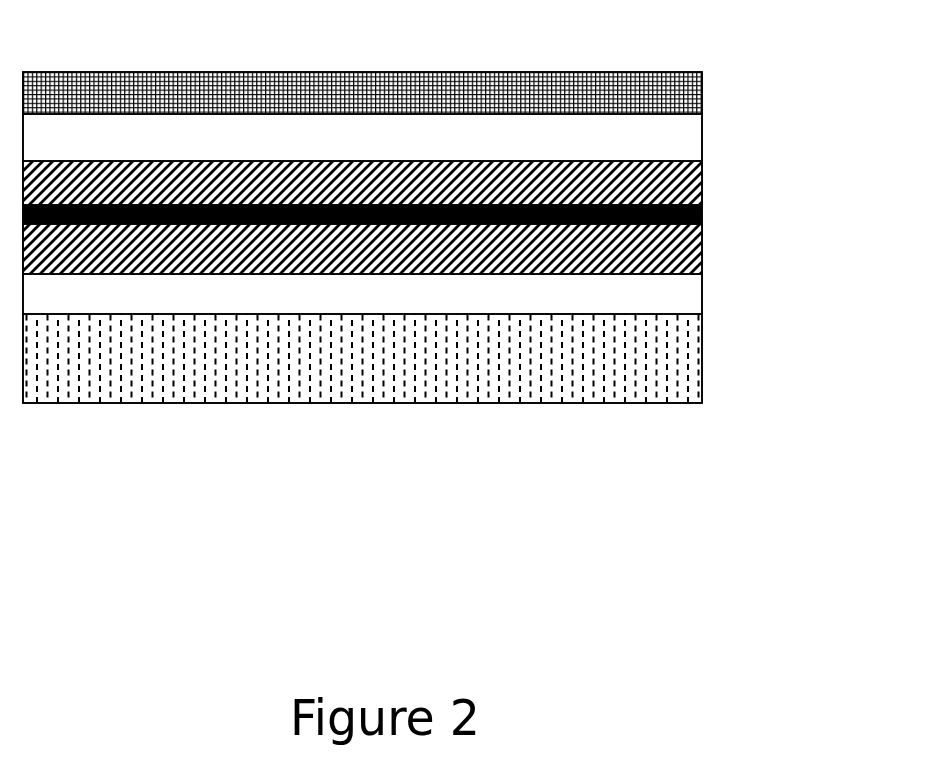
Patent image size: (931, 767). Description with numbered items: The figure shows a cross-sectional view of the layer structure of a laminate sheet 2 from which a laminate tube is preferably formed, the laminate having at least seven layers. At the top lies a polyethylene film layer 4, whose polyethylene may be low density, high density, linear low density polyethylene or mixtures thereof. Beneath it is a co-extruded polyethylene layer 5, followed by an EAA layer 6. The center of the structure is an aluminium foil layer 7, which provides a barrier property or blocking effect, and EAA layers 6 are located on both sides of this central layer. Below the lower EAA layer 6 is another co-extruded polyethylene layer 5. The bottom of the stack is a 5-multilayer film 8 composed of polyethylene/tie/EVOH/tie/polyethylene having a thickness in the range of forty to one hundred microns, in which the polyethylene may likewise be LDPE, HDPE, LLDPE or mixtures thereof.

The laminate sheet 2 is at (703, 72).
The polyethylene film layer 4 is at (703, 93).
The co-extruded polyethylene layer 5 is at (703, 139).
The EAA layer 6 is at (703, 183).
The aluminium foil layer 7 is at (703, 213).
The 5-multilayer film 8 is at (703, 336).